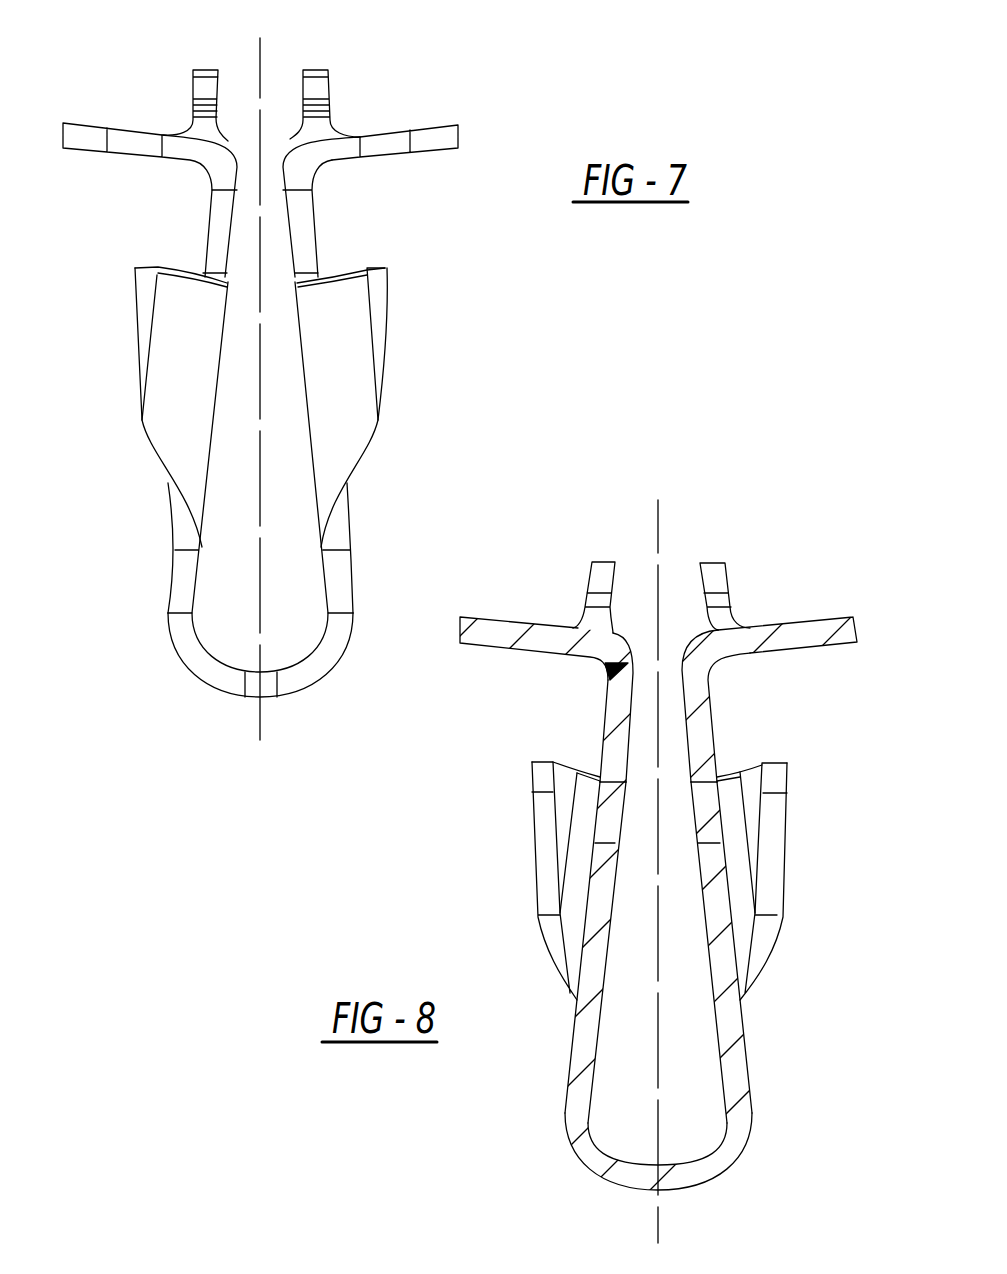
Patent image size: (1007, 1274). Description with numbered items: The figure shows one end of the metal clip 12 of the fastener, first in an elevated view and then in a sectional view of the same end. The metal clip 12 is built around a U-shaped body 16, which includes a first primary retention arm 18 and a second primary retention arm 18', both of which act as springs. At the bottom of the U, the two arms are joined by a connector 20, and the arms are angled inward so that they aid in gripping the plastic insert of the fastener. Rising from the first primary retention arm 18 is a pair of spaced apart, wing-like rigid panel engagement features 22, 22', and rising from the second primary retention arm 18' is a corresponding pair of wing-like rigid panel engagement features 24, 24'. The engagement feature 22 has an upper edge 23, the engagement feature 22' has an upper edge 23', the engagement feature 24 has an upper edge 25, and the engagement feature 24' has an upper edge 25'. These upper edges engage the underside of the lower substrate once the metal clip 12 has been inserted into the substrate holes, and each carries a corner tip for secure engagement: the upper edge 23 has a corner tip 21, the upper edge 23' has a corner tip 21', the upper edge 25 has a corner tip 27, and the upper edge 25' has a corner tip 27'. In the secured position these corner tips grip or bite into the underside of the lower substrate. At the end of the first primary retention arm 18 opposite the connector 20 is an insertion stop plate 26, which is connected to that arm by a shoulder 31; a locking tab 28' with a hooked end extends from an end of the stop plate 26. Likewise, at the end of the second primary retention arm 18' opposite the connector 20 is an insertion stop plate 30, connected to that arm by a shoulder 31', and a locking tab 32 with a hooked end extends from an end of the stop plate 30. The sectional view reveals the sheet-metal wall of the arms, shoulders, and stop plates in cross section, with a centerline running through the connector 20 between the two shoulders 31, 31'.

In FIG. 7, the metal clip 12 is at (258, 528).
In FIG. 8, the metal clip 12 is at (647, 1012).
In FIG. 7, the U-shaped body 16 is at (192, 658).
In FIG. 8, the U-shaped body 16 is at (582, 1148).
In FIG. 7, the first primary retention arm 18 is at (136, 548).
In FIG. 8, the first primary retention arm 18 is at (552, 952).
In FIG. 7, the second primary retention arm 18' is at (359, 606).
In FIG. 8, the second primary retention arm 18' is at (739, 992).
In FIG. 7, the connector 20 is at (267, 690).
In FIG. 8, the connector 20 is at (670, 1180).
In FIG. 8, the corner tip 21 is at (503, 837).
In FIG. 7, the corner tip 21' is at (104, 344).
In FIG. 8, the wing-like rigid panel engagement feature 22 is at (519, 881).
In FIG. 7, the wing-like rigid panel engagement feature 22' is at (135, 407).
In FIG. 8, the upper edge 23 is at (536, 760).
In FIG. 7, the upper edge 23' is at (127, 274).
In FIG. 7, the wing-like rigid panel engagement feature 24 is at (393, 407).
In FIG. 8, the wing-like rigid panel engagement feature 24' is at (800, 881).
In FIG. 7, the upper edge 25 is at (378, 237).
In FIG. 8, the upper edge 25' is at (769, 749).
In FIG. 7, the insertion stop plate 26 is at (87, 145).
In FIG. 8, the insertion stop plate 26 is at (493, 638).
In FIG. 7, the corner tip 27 is at (420, 323).
In FIG. 8, the corner tip 27' is at (811, 828).
In FIG. 7, the locking tab 28' is at (158, 76).
In FIG. 8, the locking tab 28' is at (581, 573).
In FIG. 7, the insertion stop plate 30 is at (447, 135).
In FIG. 8, the insertion stop plate 30 is at (800, 642).
In FIG. 7, the shoulder 31 is at (210, 146).
In FIG. 8, the shoulder 31 is at (625, 644).
In FIG. 7, the shoulder 31' is at (315, 145).
In FIG. 8, the shoulder 31' is at (707, 644).
In FIG. 7, the locking tab 32 is at (320, 88).
In FIG. 8, the locking tab 32 is at (713, 573).